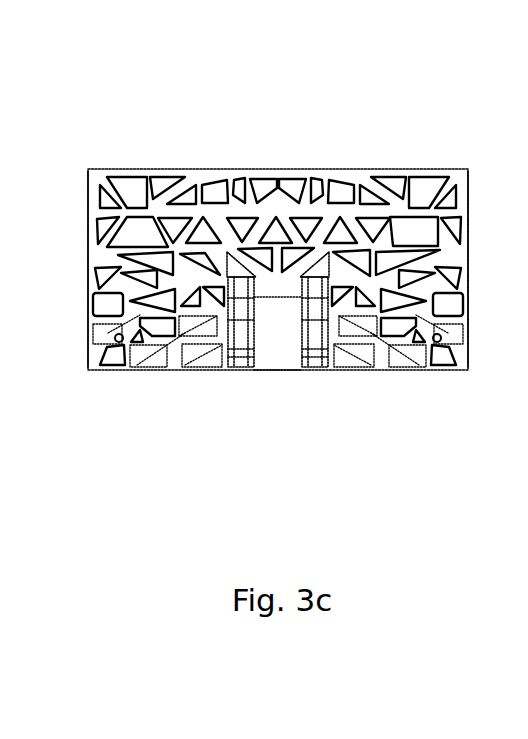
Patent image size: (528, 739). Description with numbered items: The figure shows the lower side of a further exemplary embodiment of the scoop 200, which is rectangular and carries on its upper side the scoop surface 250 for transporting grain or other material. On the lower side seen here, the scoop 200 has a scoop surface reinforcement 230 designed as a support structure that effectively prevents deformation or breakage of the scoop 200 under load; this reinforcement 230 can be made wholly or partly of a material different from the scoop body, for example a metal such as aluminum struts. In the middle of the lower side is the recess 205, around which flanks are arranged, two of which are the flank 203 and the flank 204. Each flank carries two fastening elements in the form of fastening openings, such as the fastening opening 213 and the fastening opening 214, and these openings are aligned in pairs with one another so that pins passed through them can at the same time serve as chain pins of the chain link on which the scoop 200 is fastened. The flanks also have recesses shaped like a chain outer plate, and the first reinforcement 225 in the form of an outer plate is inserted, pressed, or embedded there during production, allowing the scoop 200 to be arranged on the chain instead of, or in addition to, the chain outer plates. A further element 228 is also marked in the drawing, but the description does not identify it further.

The scoop 200 is at (278, 212).
The scoop surface 250 is at (342, 168).
The scoop surface reinforcement 230 is at (102, 322).
The lower left lattice cell 228 is at (142, 343).
The fastening opening 214 is at (205, 345).
The flank 204 is at (243, 366).
The recess 205 is at (275, 333).
The flank 203 is at (313, 363).
The fastening opening 213 is at (362, 358).
The first reinforcement 225 is at (413, 362).